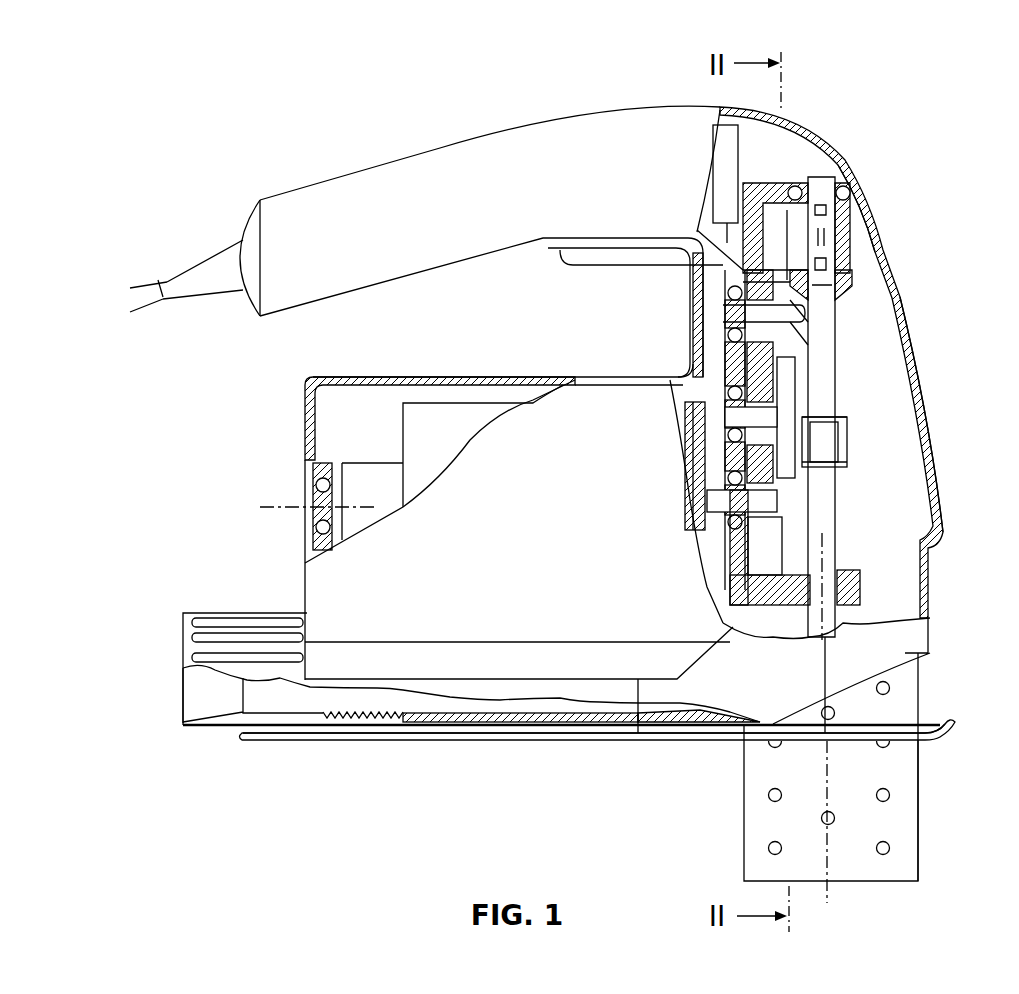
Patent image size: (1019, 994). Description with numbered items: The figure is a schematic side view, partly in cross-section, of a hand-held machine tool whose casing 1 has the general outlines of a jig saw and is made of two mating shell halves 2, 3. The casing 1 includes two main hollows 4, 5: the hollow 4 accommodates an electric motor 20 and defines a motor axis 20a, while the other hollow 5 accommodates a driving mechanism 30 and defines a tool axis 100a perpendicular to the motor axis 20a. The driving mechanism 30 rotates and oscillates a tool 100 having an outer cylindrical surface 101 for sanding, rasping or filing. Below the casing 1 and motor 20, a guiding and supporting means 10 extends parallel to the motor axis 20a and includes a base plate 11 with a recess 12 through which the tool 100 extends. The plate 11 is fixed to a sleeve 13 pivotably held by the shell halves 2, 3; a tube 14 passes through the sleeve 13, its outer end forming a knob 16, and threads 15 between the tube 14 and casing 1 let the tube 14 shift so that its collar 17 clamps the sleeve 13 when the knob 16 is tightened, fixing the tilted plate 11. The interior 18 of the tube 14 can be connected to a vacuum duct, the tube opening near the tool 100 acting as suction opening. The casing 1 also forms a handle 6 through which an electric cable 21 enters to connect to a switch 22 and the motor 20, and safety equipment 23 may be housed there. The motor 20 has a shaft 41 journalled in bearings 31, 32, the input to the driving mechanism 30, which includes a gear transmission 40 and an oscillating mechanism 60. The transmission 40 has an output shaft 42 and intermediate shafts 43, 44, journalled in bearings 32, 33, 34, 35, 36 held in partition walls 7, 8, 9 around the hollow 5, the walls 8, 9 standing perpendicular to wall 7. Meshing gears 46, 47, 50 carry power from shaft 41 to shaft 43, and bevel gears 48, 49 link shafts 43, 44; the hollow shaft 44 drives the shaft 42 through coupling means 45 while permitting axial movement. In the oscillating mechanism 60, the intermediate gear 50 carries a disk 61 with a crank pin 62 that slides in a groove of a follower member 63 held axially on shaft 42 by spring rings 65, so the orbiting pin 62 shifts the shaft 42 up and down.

The casing 1 is at (300, 418).
The shell half 2 is at (533, 158).
The shell half 3 is at (800, 120).
The hollow 4 is at (497, 385).
The hollow 5 is at (930, 497).
The handle 6 is at (346, 195).
The partition wall 7 is at (673, 383).
The partition wall 8 is at (755, 183).
The partition wall 9 is at (765, 590).
The guiding and supporting means 10 is at (313, 765).
The base plate 11 is at (700, 740).
The recess 12 is at (935, 732).
The sleeve 13 is at (450, 725).
The tube 14 is at (520, 720).
The threads 15 is at (356, 725).
The knob 16 is at (233, 612).
The collar 17 is at (636, 722).
The interior 18 is at (213, 706).
The electric motor 20 is at (432, 428).
The motor axis 20a is at (380, 507).
The electric cable 21 is at (142, 295).
The switch 22 is at (593, 258).
The safety equipment 23 is at (727, 170).
The driving mechanism 30 is at (892, 219).
The bearing 31 is at (305, 538).
The bearing 32 is at (727, 530).
The bearing 33 is at (693, 300).
The bearing 34 is at (845, 172).
The bearing 35 is at (848, 575).
The bearing 36 is at (730, 445).
The gear transmission 40 is at (685, 357).
The shaft 41 is at (720, 500).
The output shaft 42 is at (823, 503).
The intermediate shaft 43 is at (737, 313).
The intermediate shaft 44 is at (836, 249).
The coupling means 45 is at (823, 222).
The gear 46 is at (762, 520).
The gear 47 is at (727, 250).
The bevel gear 48 is at (805, 340).
The bevel gear 49 is at (840, 277).
The intermediate gear 50 is at (737, 362).
The oscillating mechanism 60 is at (858, 430).
The disk 61 is at (785, 393).
The crank pin 62 is at (843, 413).
The follower member 63 is at (825, 447).
The spring rings 65 is at (838, 463).
The tool 100 is at (930, 812).
The tool axis 100a is at (832, 890).
The outer cylindrical surface 101 is at (925, 778).